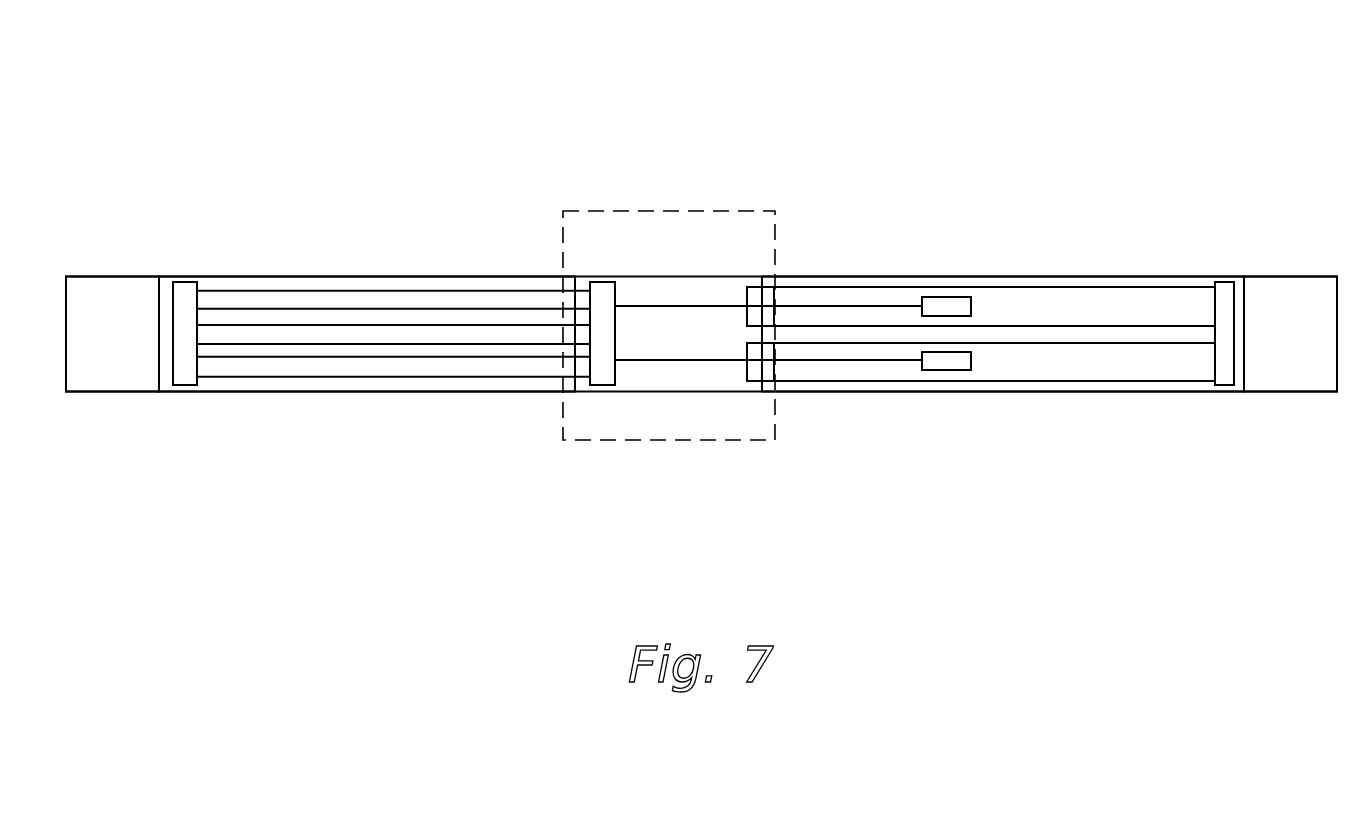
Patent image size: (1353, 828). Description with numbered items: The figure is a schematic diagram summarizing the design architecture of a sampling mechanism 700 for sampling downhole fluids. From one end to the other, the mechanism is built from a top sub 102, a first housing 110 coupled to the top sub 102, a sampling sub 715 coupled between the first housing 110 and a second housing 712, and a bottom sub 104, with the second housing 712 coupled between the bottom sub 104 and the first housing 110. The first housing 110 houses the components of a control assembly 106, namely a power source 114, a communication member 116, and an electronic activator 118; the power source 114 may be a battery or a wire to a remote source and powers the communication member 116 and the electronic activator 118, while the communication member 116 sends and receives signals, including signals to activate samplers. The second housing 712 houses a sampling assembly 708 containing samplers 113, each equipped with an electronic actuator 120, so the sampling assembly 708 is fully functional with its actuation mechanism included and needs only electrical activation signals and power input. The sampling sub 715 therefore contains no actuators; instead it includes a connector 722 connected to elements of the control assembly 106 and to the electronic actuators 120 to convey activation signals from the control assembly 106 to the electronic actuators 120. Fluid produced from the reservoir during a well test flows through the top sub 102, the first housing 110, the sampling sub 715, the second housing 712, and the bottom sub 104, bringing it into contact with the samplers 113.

The sampling mechanism 700 is at (703, 302).
The top sub 102 is at (117, 275).
The bottom sub 104 is at (1293, 275).
The control assembly 106 is at (285, 386).
The first housing 110 is at (262, 275).
The power source 114 is at (338, 333).
The communication member 116 is at (398, 290).
The electronic activator 118 is at (462, 367).
The connector 722 is at (602, 298).
The sampling sub 715 is at (668, 441).
The second housing 712 is at (857, 275).
The samplers 113 is at (1098, 303).
The electronic actuators 120 is at (947, 303).
The sampling assembly 708 is at (1072, 386).